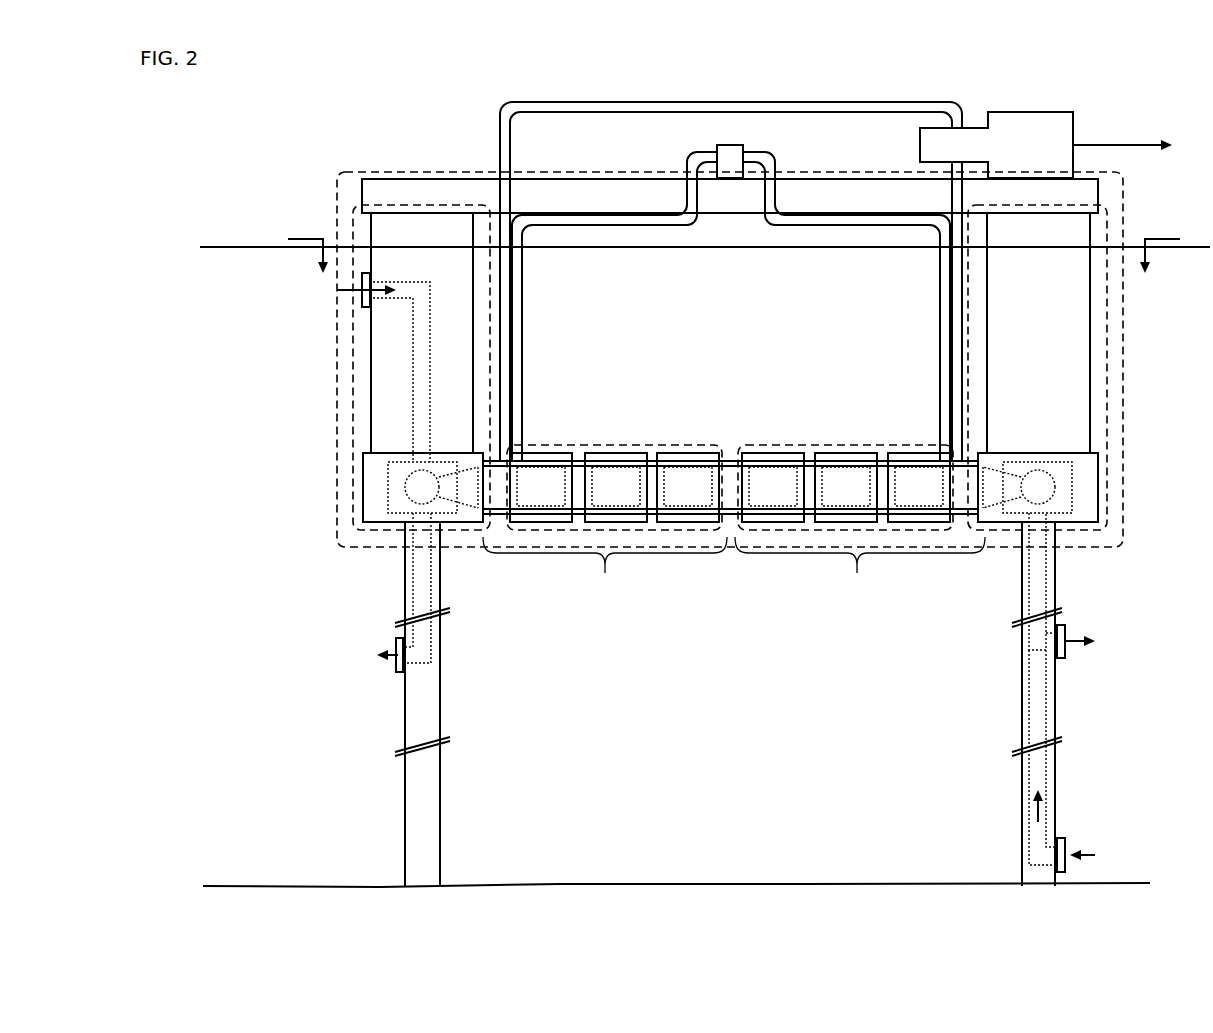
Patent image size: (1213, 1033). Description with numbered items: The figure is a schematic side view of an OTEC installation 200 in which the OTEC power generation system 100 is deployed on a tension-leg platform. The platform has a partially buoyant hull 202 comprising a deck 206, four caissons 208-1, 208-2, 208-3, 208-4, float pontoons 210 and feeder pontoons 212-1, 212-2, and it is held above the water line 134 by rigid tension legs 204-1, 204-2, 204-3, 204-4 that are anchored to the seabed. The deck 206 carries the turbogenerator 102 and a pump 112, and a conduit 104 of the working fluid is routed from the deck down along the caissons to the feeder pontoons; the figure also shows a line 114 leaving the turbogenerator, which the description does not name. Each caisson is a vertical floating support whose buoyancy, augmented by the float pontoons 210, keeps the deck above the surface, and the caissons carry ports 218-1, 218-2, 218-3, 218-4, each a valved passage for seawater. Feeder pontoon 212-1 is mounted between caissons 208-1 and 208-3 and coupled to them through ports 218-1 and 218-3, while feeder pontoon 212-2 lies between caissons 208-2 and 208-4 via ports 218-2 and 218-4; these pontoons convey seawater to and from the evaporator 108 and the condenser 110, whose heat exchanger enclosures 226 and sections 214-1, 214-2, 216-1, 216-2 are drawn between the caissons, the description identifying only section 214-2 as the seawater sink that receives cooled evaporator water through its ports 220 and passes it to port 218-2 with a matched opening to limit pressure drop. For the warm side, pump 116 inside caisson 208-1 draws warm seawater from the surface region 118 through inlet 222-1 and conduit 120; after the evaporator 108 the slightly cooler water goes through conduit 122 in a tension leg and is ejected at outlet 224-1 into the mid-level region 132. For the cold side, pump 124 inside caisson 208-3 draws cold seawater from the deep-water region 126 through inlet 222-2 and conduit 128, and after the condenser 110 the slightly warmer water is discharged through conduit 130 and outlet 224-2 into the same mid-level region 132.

The installation 200 is at (374, 95).
The OTEC power generation system 100 is at (484, 90).
The turbogenerator 102 is at (1020, 112).
The conduit 104 is at (610, 112).
The pump 112 is at (730, 146).
The electrical power output 114 is at (1130, 142).
The hull 202 is at (355, 170).
The deck 206 is at (565, 208).
The water line 134 is at (250, 247).
The surface region 118 is at (315, 326).
The inlet 222-1 is at (375, 284).
The conduit 120 is at (421, 312).
The pump 116 is at (418, 487).
The caisson 208-1 is at (334, 367).
The caisson 208-2 is at (353, 418).
The caisson 208-3 is at (1090, 367).
The caisson 208-4 is at (1107, 378).
The float pontoons 210 is at (388, 487).
The evaporator 108 is at (553, 442).
The condenser 110 is at (920, 442).
The heat exchanger enclosure 226 is at (626, 442).
The ports 220 is at (730, 447).
The feeder pontoon 212-1 is at (731, 288).
The feeder pontoon 212-2 is at (731, 288).
The evaporator section 214-1 is at (605, 522).
The section 214-2 is at (605, 509).
The condenser section 216-1 is at (860, 522).
The condenser section 216-2 is at (860, 509).
The port 218-1 is at (547, 556).
The port 218-2 is at (465, 488).
The port 218-3 is at (913, 556).
The port 218-4 is at (997, 488).
The pump 124 is at (1037, 487).
The outlet 224-1 is at (397, 640).
The conduit 122 is at (427, 633).
The mid-level region 132 is at (373, 718).
The tension leg 204-1 is at (419, 699).
The tension leg 204-2 is at (397, 699).
The tension leg 204-3 is at (1068, 699).
The tension leg 204-4 is at (1068, 699).
The conduit 130 is at (1038, 642).
The conduit 128 is at (1040, 762).
The inlet 222-2 is at (1070, 838).
The outlet 224-2 is at (1070, 625).
The deep-water region 126 is at (965, 855).